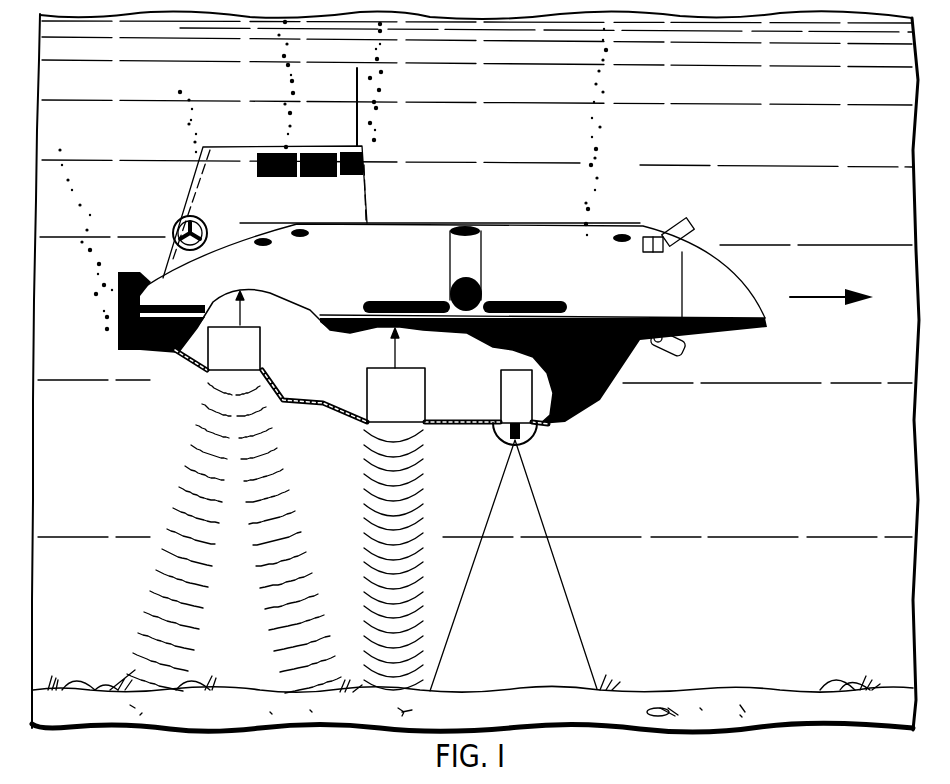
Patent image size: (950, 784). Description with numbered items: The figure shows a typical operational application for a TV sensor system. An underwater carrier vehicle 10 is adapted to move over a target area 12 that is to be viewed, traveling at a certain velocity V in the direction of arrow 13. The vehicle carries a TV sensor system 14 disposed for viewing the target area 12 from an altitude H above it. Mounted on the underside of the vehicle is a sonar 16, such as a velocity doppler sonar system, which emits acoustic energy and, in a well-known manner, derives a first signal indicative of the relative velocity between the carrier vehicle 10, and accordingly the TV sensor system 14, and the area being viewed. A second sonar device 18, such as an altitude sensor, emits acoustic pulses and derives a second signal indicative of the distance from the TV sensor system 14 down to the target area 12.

The underwater carrier vehicle 10 is at (427, 226).
The target area 12 is at (702, 691).
The arrow 13 is at (800, 295).
The TV sensor system 14 is at (501, 377).
The sonar 16 is at (262, 345).
The second sonar device 18 is at (427, 388).